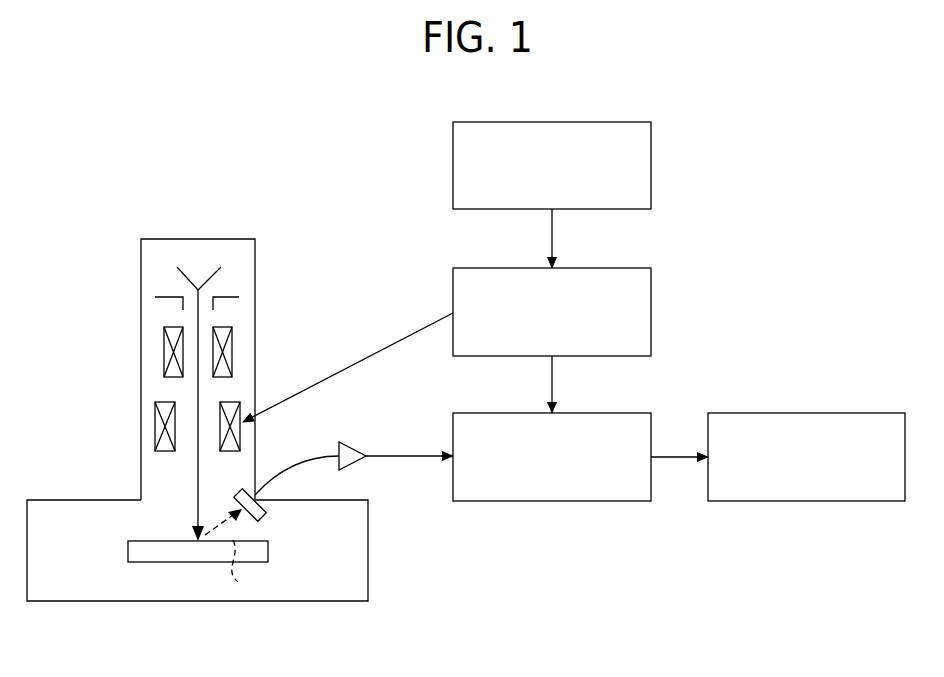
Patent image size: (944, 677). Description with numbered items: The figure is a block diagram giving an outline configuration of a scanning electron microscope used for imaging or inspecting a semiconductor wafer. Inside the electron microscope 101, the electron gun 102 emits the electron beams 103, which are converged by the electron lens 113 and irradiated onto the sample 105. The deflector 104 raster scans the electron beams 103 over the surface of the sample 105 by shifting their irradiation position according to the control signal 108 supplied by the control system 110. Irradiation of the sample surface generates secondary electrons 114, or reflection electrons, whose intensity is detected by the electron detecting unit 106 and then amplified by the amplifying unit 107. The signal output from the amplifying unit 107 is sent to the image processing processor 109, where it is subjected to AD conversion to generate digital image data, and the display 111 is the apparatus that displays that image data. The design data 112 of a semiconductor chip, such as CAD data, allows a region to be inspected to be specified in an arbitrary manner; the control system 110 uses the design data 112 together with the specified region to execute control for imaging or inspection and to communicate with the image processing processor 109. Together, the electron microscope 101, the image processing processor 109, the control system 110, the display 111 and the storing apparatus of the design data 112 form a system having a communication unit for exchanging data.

The electron microscope 101 is at (232, 239).
The electron gun 102 is at (160, 297).
The electron beams 103 is at (148, 388).
The deflector 104 is at (155, 428).
The sample 105 is at (128, 552).
The electron detecting unit 106 is at (260, 512).
The amplifying unit 107 is at (350, 446).
The control signal 108 is at (351, 367).
The image processing processor 109 is at (580, 413).
The control system 110 is at (580, 268).
The display 111 is at (842, 413).
The design data 112 is at (580, 122).
The electron lens 113 is at (164, 355).
The secondary electrons 114 is at (252, 552).